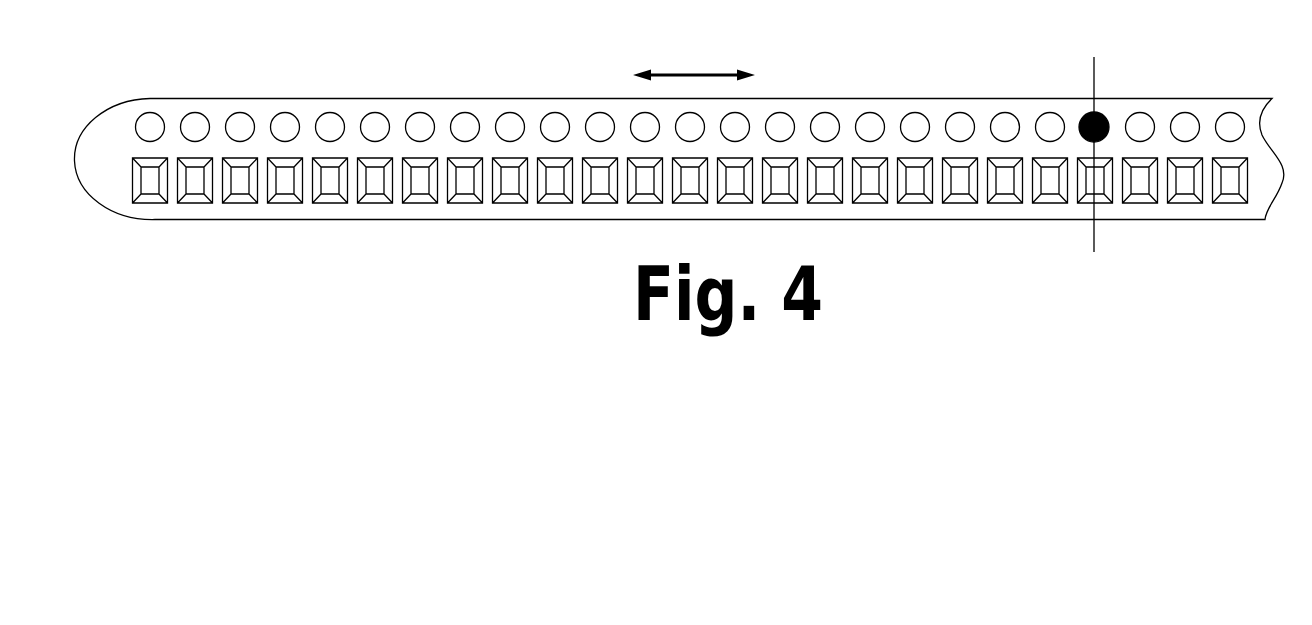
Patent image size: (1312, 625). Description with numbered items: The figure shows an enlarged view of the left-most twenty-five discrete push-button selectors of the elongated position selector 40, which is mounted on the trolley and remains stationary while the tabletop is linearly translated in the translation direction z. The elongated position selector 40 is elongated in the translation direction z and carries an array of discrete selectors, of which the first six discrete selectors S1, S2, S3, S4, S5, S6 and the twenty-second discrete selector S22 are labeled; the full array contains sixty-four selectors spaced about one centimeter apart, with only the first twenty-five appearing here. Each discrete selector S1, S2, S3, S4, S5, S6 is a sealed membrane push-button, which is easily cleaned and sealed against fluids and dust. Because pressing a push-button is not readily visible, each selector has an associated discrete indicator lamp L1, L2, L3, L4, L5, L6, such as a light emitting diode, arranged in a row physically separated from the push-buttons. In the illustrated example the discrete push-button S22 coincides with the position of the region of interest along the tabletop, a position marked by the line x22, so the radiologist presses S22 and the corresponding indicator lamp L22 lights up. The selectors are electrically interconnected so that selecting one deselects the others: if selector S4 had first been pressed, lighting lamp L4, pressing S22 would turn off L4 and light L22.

The elongated position selector 40 is at (932, 69).
The translation direction z is at (694, 54).
The discrete indicator lamp L1 is at (149, 127).
The discrete indicator lamp L2 is at (194, 127).
The discrete indicator lamp L3 is at (239, 127).
The discrete indicator lamp L4 is at (284, 127).
The discrete indicator lamp L5 is at (329, 127).
The discrete indicator lamp L6 is at (374, 127).
The indicator lamp L22 is at (1085, 118).
The position coordinate of twenty-second component x22 is at (1111, 135).
The discrete selector S1 is at (150, 182).
The discrete selector S2 is at (195, 182).
The discrete selector S3 is at (240, 182).
The discrete selector S4 is at (285, 182).
The discrete selector S5 is at (330, 182).
The discrete selector S6 is at (375, 182).
The discrete push-button S22 is at (1103, 193).